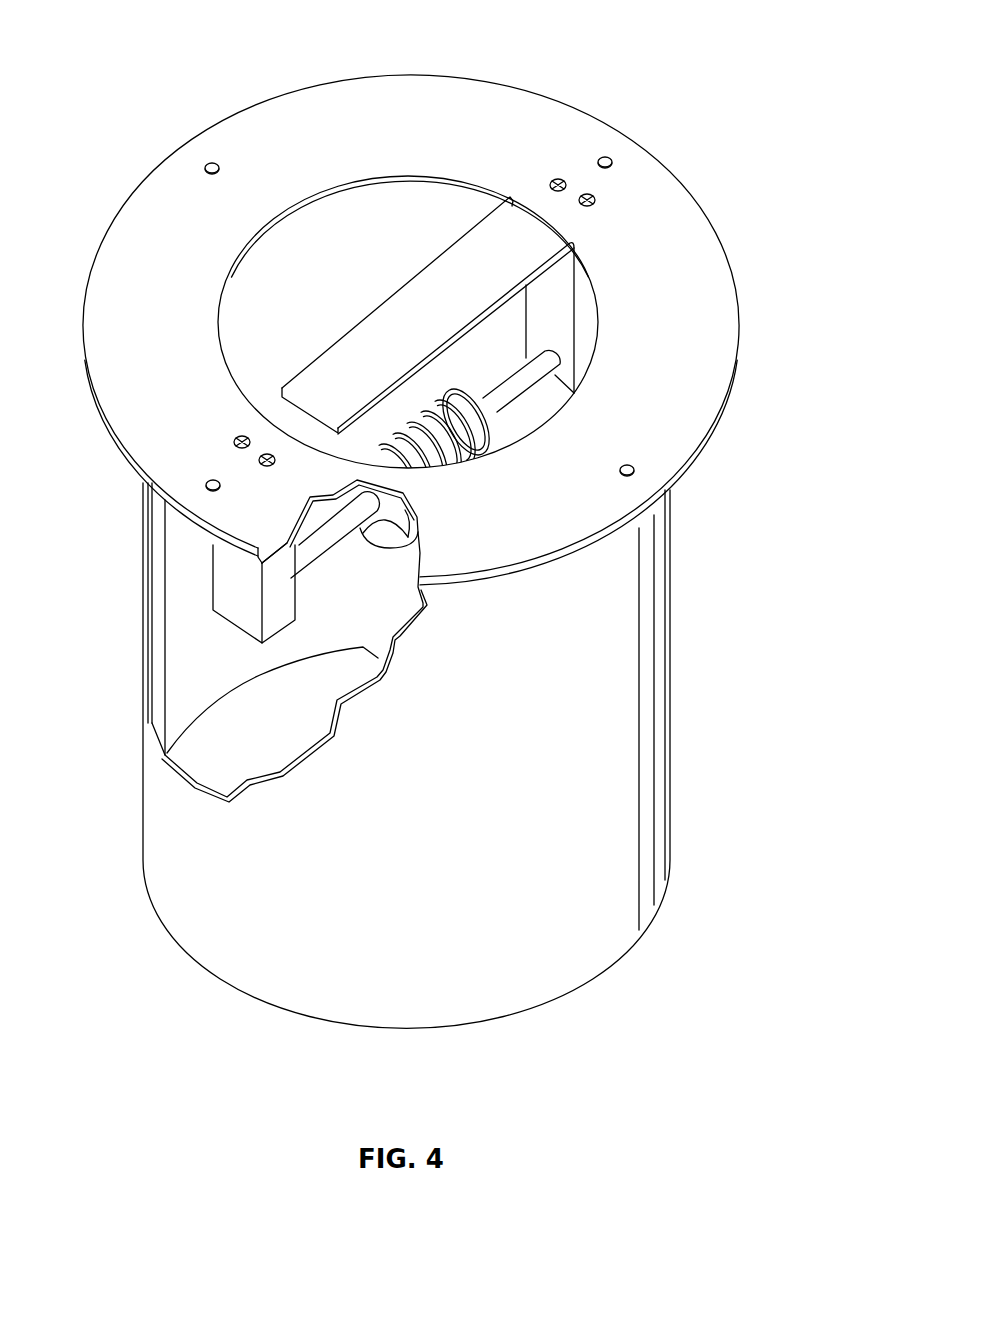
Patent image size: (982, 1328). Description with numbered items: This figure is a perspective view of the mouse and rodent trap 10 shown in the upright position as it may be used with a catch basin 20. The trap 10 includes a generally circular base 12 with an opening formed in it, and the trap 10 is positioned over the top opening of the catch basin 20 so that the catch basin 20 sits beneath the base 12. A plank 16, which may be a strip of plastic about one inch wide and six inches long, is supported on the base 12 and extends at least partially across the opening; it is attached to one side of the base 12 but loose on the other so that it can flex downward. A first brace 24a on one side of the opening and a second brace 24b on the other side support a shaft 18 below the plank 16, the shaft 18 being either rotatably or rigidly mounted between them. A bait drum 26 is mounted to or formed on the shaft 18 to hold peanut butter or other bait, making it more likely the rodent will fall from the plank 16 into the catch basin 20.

The trap 10 is at (702, 120).
The base 12 is at (427, 76).
The plank 16 is at (400, 292).
The shaft 18 is at (335, 550).
The catch basin 20 is at (676, 690).
The first brace 24a is at (555, 317).
The second brace 24b is at (228, 623).
The bait drum 26 is at (387, 542).